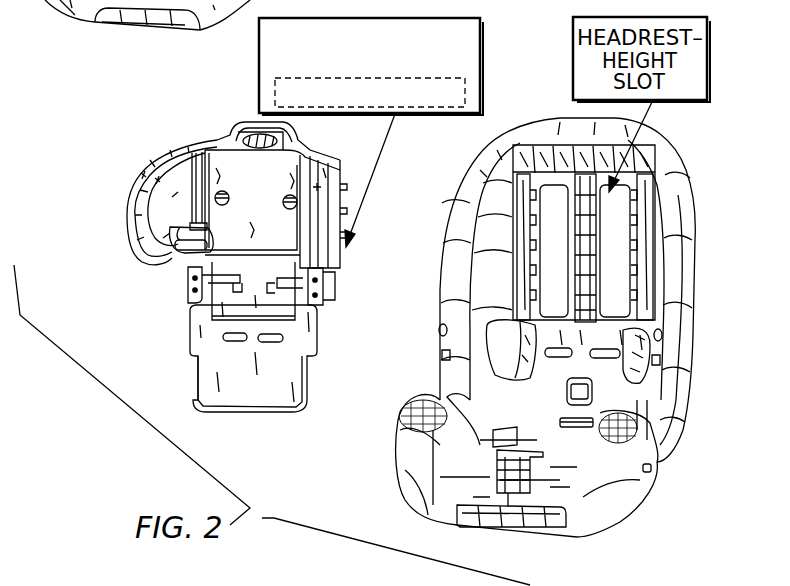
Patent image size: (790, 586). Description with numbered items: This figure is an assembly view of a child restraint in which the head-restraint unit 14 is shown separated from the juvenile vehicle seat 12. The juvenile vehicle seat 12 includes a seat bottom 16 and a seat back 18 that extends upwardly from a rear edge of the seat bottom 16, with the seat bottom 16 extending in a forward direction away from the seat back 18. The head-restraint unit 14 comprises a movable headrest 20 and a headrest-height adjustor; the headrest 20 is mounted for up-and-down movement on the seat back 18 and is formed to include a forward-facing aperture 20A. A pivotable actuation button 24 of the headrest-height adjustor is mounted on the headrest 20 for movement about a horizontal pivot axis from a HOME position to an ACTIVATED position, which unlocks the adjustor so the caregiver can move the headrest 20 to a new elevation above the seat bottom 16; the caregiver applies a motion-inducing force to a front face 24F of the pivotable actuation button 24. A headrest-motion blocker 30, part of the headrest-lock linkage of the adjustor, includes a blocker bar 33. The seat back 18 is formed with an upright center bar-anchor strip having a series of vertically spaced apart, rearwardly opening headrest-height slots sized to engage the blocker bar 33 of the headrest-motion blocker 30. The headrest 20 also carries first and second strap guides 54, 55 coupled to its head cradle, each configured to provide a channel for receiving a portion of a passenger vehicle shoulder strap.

The juvenile vehicle seat 12 is at (567, 327).
The head-restraint unit 14 is at (214, 238).
The seat bottom 16 is at (95, 20).
The seat back 18 is at (607, 393).
The headrest 20 is at (122, 213).
The forward-facing aperture 20A is at (298, 133).
The pivotable actuation button 24 is at (245, 140).
The front face 24F is at (256, 146).
The headrest-motion blocker 30 is at (394, 130).
The blocker bar 33 is at (485, 90).
The first strap guide 54 is at (180, 268).
The second strap guide 55 is at (340, 263).